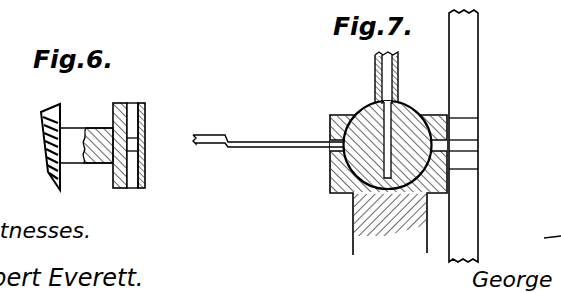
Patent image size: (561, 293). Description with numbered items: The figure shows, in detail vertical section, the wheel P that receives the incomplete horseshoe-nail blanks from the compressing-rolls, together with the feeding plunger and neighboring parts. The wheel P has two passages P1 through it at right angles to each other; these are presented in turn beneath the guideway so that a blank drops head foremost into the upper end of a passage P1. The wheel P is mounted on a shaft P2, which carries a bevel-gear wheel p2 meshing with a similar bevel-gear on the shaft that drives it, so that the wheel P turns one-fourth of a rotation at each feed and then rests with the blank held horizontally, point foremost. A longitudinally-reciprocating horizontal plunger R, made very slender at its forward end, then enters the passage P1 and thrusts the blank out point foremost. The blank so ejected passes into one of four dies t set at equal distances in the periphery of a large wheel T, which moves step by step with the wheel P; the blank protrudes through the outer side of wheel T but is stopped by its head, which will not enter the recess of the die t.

In FIG. 6, the bevel-gear wheel p2 is at (49, 108).
In FIG. 6, the shaft P2 is at (83, 137).
In FIG. 6, the passage P1 is at (132, 112).
In FIG. 7, the passage P1 is at (362, 142).
In FIG. 6, the wheel P is at (143, 110).
In FIG. 7, the wheel P is at (366, 113).
In FIG. 7, the plunger R is at (269, 136).
In FIG. 7, the wheel T is at (470, 136).
In FIG. 7, the die t is at (469, 134).